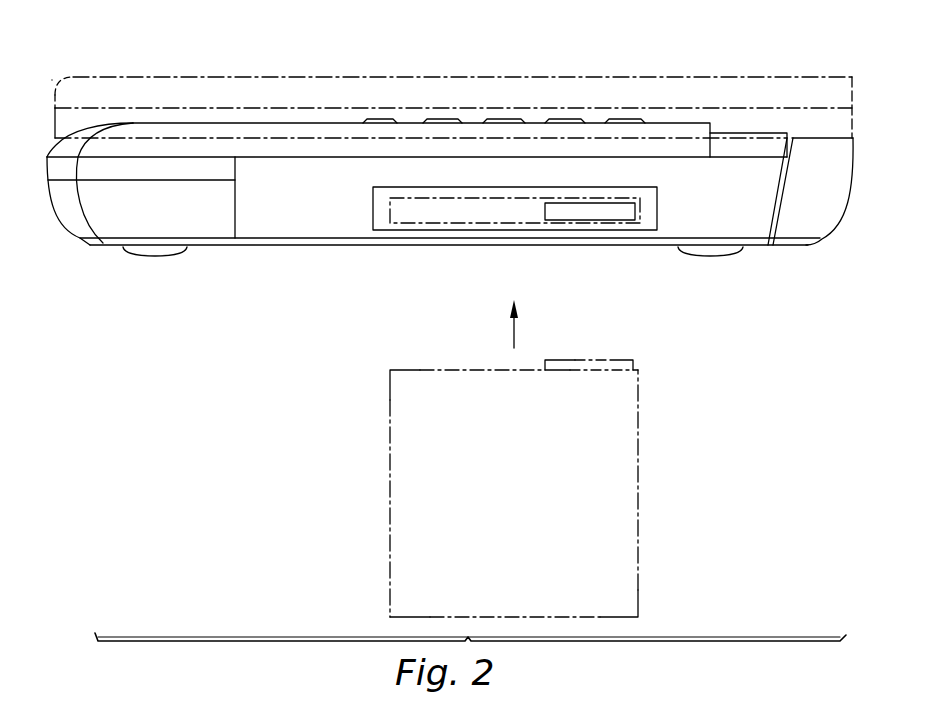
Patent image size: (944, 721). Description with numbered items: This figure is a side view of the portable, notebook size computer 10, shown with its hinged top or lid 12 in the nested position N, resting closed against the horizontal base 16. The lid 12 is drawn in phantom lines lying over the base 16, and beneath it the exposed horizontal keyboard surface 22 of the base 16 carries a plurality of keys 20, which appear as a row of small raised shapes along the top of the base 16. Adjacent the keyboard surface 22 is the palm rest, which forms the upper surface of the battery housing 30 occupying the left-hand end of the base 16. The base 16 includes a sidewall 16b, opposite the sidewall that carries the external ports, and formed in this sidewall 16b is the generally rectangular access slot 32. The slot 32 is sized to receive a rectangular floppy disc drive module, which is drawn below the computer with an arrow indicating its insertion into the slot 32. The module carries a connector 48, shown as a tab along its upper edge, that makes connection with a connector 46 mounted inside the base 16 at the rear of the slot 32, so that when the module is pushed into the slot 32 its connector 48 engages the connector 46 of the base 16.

The portable notebook size computer 10 is at (783, 54).
The nested position N is at (75, 77).
The hinged top or lid 12 is at (147, 77).
The keyboard surface 22 is at (302, 123).
The keys 20 is at (380, 122).
The base 16 is at (228, 252).
The sidewall 16b is at (273, 222).
The battery housing 30 is at (128, 220).
The access slot 32 is at (385, 231).
The connector 46 is at (588, 211).
The connector 48 is at (608, 360).